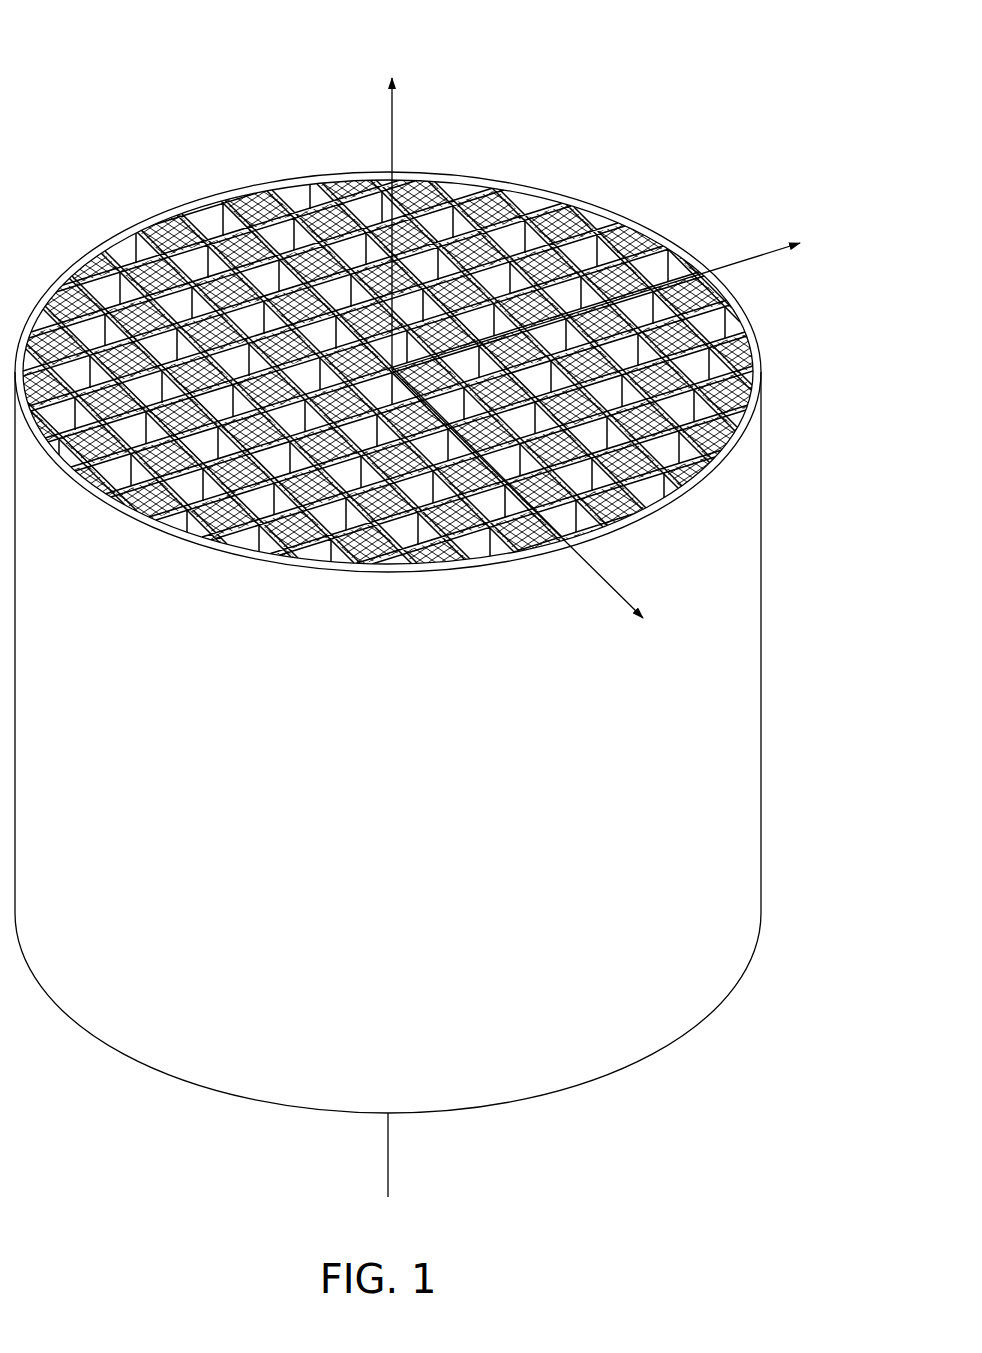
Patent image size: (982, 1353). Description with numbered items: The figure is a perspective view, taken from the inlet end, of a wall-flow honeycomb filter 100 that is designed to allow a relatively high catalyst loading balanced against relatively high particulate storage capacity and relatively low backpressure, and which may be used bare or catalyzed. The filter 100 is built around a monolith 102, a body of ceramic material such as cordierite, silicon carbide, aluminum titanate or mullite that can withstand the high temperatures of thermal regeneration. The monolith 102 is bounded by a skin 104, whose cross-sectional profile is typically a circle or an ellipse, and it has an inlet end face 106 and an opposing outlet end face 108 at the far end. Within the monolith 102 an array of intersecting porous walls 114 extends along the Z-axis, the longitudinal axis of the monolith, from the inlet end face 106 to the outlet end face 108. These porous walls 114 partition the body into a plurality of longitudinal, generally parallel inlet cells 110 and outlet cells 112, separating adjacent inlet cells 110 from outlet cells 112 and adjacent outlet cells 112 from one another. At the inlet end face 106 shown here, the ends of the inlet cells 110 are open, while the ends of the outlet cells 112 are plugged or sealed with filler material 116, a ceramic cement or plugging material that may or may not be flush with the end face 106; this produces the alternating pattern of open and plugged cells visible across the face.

The wall-flow honeycomb filter 100 is at (422, 157).
The monolith 102 is at (762, 678).
The skin 104 is at (698, 253).
The inlet end face 106 is at (638, 228).
The outlet end face 108 is at (578, 1085).
The inlet cells 110 is at (337, 217).
The outlet cells 112 is at (553, 223).
The porous walls 114 is at (138, 228).
The filler material 116 is at (567, 207).